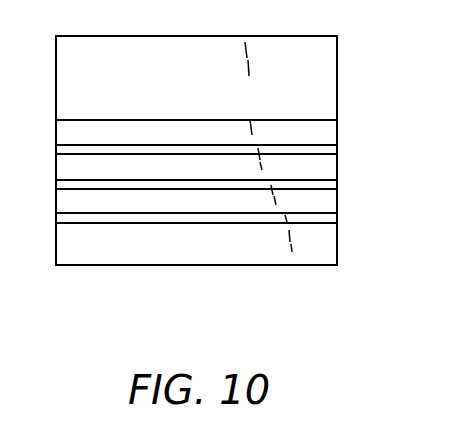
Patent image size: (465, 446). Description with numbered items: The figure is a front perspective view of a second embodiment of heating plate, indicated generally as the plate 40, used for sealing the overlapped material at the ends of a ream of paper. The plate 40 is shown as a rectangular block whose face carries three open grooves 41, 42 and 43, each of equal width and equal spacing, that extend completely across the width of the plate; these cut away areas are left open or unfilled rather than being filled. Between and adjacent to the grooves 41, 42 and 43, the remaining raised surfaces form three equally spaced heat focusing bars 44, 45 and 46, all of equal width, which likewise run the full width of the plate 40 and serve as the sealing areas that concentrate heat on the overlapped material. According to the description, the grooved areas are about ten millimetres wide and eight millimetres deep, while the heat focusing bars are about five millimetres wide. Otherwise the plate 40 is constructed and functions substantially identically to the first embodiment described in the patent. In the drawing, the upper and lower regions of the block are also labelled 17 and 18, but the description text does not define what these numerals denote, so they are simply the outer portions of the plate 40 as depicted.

The first outer layer 17 is at (330, 62).
The second outer layer 18 is at (313, 228).
The plate 40 is at (262, 283).
The open groove 41 is at (332, 189).
The open groove 42 is at (327, 153).
The open groove 43 is at (330, 120).
The heat focusing bar 44 is at (207, 218).
The heat focusing bar 45 is at (145, 183).
The heat focusing bar 46 is at (204, 150).